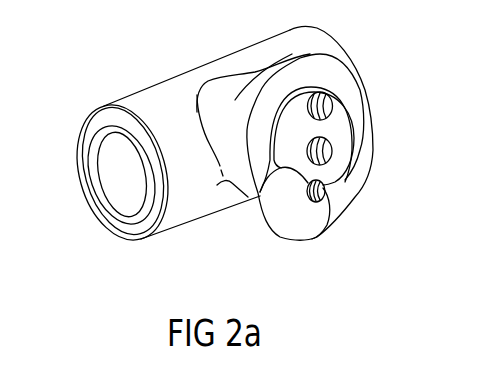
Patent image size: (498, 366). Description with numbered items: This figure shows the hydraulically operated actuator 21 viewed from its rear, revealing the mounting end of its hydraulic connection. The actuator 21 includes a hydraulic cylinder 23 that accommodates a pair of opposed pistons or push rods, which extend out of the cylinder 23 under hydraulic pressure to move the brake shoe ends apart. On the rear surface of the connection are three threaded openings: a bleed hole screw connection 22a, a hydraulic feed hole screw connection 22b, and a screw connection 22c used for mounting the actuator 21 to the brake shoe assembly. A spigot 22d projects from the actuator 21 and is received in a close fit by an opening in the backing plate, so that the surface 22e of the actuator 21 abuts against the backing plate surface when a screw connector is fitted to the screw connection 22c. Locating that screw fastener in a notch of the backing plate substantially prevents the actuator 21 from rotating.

The actuator 21 is at (192, 240).
The bleed hole screw connection 22a is at (313, 139).
The hydraulic feed hole screw connection 22b is at (274, 92).
The screw connection 22c is at (307, 238).
The spigot 22d is at (235, 163).
The surface 22e is at (268, 92).
The hydraulic cylinder 23 is at (163, 98).